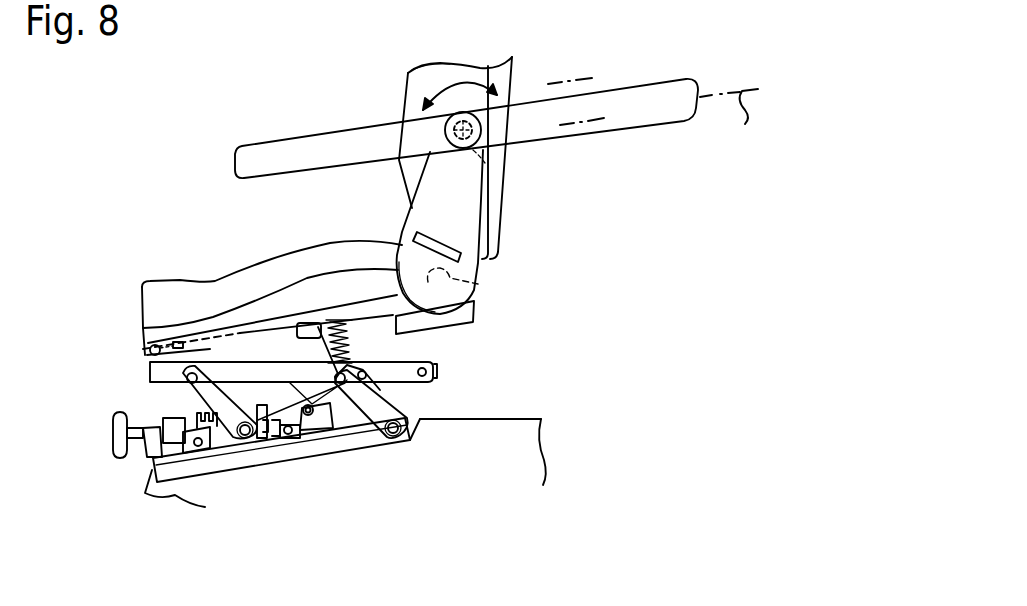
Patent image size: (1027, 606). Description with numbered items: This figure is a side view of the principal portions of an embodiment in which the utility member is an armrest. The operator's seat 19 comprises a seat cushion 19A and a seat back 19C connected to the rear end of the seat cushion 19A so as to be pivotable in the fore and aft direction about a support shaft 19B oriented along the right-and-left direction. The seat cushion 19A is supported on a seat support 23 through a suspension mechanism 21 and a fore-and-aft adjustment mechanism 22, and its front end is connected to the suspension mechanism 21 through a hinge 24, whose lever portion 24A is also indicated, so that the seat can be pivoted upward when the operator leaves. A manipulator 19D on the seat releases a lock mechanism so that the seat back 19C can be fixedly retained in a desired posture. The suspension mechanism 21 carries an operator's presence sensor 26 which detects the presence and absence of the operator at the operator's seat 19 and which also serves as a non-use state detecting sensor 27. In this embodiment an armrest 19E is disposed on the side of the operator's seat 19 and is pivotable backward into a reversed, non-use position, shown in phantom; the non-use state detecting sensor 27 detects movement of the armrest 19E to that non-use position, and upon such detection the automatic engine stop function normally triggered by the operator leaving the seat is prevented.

The operator's seat 19 is at (404, 105).
The seat cushion 19A is at (324, 247).
The support shaft 19B is at (480, 284).
The seat back 19C is at (511, 76).
The manipulator 19D is at (433, 238).
The armrest 19E is at (299, 133).
The suspension mechanism 21 is at (402, 396).
The fore-and-aft adjustment mechanism 22 is at (287, 461).
The seat support 23 is at (146, 494).
The hinge 24 is at (143, 352).
The adjustment lever portion 24A is at (150, 348).
The operator's presence sensor 26 is at (252, 358).
The non-use state detecting sensor 27 is at (505, 178).